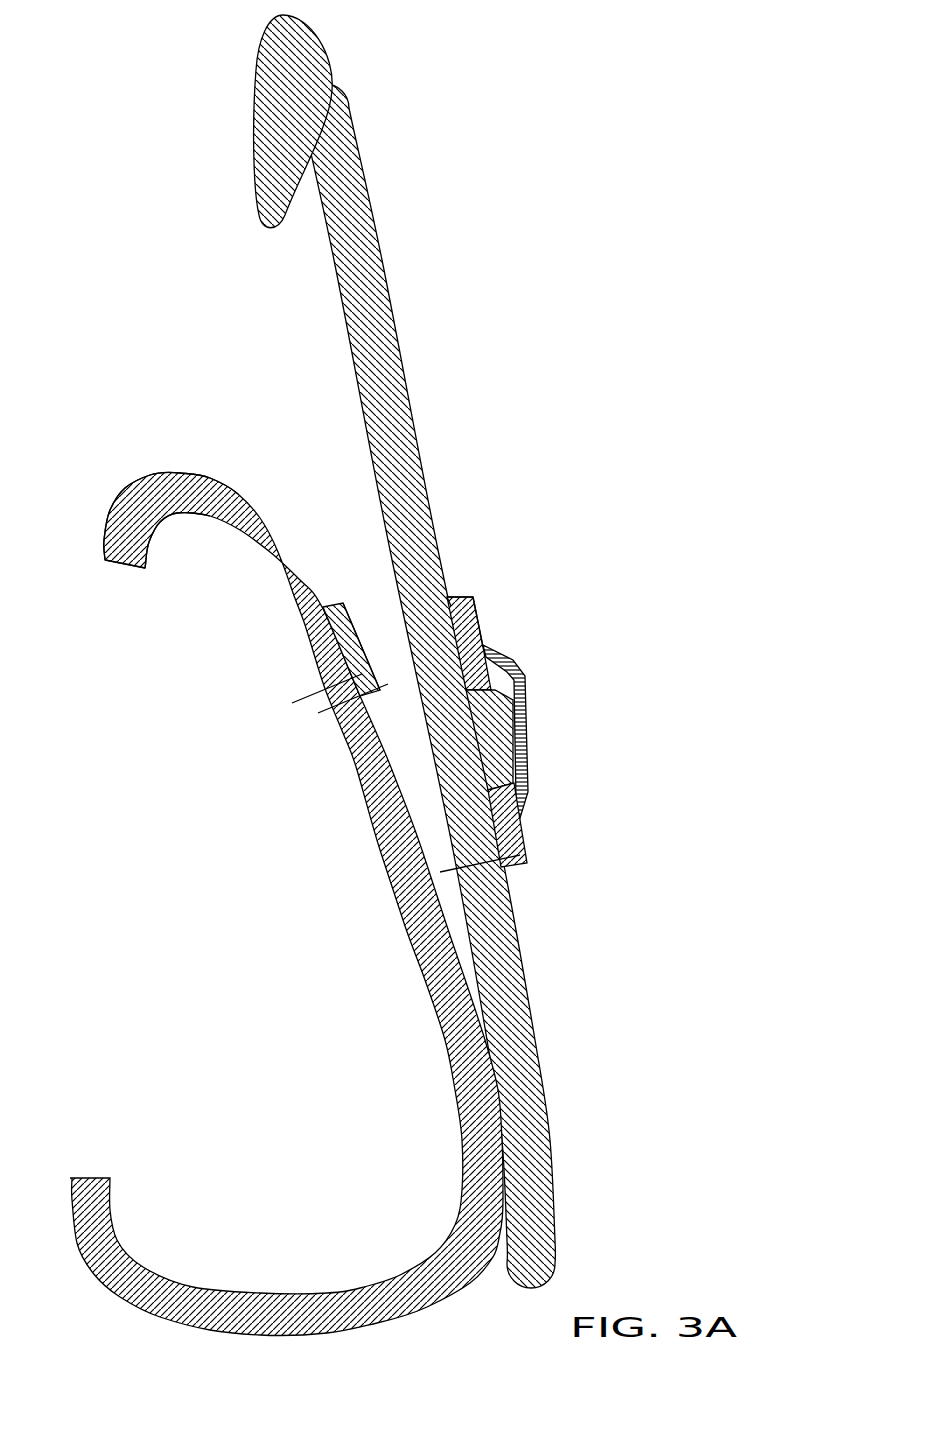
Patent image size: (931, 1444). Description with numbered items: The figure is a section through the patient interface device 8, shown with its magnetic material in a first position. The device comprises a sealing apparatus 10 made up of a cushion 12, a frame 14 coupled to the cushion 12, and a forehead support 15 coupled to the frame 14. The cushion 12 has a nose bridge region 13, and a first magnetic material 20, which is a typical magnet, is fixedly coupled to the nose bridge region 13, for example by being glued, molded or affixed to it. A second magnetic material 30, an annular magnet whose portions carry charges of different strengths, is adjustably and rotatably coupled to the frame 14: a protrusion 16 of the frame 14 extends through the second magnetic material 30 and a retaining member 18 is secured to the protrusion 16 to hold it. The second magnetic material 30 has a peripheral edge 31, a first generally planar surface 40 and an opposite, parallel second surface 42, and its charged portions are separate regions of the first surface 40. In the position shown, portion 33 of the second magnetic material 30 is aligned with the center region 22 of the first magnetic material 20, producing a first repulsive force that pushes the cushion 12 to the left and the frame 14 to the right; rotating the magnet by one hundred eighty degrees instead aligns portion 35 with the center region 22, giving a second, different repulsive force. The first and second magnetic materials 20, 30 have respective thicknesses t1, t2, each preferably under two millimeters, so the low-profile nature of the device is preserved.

The patient interface device 8 is at (340, 675).
The sealing apparatus 10 is at (293, 675).
The cushion 12 is at (120, 553).
The nose bridge region 13 is at (300, 625).
The frame 14 is at (386, 330).
The forehead support 15 is at (302, 53).
The protrusion 16 is at (500, 733).
The retaining member 18 is at (532, 684).
The first magnetic material 20 is at (332, 601).
The center region 22 is at (383, 666).
The second magnetic material 30 is at (486, 595).
The peripheral edge 31 is at (458, 597).
The portion 33 is at (462, 672).
The portion 35 is at (512, 845).
The first generally planar surface 40 is at (449, 596).
The second surface 42 is at (487, 641).
The thickness t1 is at (338, 685).
The thickness t2 is at (522, 868).